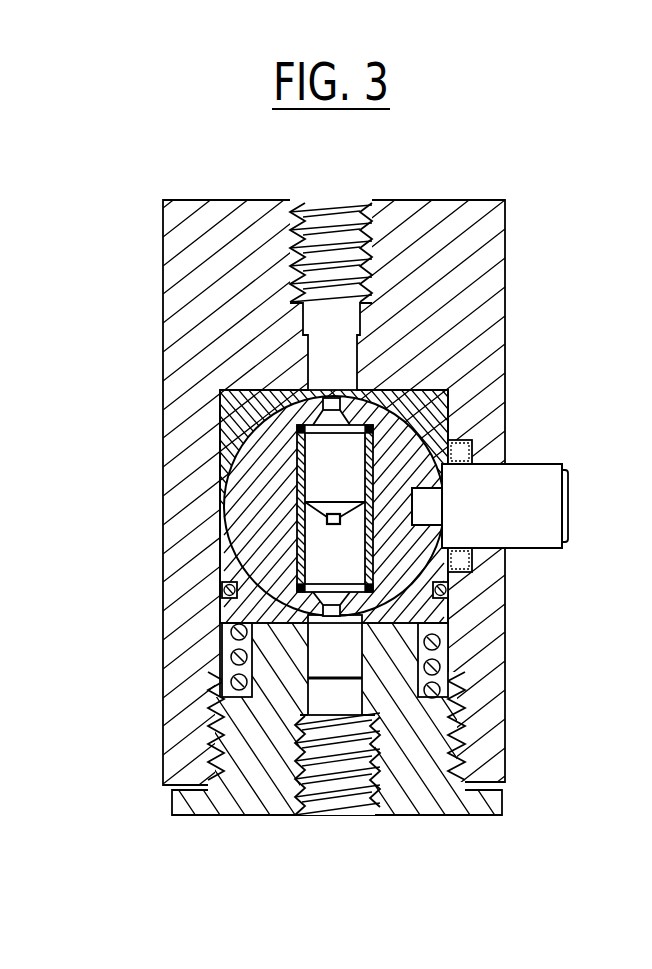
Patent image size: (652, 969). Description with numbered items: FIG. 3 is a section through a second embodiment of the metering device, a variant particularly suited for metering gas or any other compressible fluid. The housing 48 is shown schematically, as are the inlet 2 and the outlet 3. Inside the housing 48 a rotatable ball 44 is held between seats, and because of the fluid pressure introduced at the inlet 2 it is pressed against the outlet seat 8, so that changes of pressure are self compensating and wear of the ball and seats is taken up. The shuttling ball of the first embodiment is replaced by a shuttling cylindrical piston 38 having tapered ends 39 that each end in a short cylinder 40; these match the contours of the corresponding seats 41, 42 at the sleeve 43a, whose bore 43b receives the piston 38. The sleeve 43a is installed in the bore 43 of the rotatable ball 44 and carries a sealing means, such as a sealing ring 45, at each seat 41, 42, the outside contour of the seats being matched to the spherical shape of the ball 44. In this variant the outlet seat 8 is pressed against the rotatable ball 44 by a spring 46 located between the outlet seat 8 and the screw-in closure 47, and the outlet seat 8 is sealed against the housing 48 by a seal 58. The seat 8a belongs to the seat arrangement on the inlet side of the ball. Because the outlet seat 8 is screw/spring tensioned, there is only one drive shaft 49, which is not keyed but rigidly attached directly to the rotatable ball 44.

The inlet 2 is at (340, 250).
The outlet 3 is at (352, 790).
The outlet seat 8 is at (252, 610).
The upper seat 8a is at (248, 412).
The shuttling cylindrical piston 38 is at (395, 400).
The tapered ends 39 is at (390, 574).
The short cylinder 40 is at (330, 515).
The seat 41 is at (325, 402).
The seat 42 is at (224, 678).
The bore of rotatable ball 43 is at (380, 408).
The sleeve 43a is at (340, 456).
The bore of sleeve 43b is at (317, 475).
The rotatable ball 44 is at (415, 590).
The sealing ring 45 is at (316, 572).
The spring 46 is at (460, 700).
The screw-in closure 47 is at (438, 775).
The housing 48 is at (518, 252).
The drive shaft 49 is at (540, 502).
The seal 58 is at (227, 594).